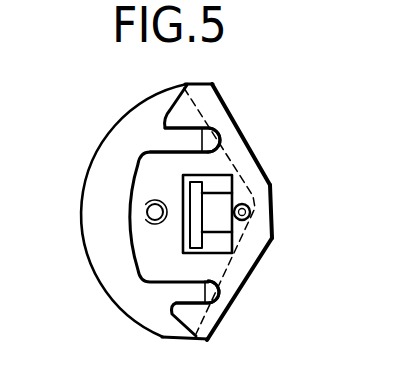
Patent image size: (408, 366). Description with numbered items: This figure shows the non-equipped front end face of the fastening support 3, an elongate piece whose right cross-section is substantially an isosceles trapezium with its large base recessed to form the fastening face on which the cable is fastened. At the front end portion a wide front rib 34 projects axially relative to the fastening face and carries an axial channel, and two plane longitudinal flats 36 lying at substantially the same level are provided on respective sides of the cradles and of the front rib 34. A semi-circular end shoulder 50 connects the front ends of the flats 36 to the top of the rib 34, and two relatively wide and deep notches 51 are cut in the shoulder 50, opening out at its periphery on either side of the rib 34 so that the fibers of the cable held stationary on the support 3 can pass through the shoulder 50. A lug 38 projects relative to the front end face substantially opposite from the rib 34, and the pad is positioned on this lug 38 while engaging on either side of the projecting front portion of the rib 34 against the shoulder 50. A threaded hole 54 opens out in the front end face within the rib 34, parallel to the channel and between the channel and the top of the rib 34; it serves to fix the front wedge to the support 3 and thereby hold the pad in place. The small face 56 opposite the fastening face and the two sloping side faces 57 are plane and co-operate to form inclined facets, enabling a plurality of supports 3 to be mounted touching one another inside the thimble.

The fastening support 3 is at (201, 200).
The front rib 34 is at (135, 246).
The longitudinal flats 36 is at (205, 295).
The lug 38 is at (255, 219).
The end shoulder 50 is at (170, 113).
The notches 51 is at (150, 148).
The threaded hole 54 is at (150, 212).
The small face 56 is at (273, 203).
The sloping side faces 57 is at (243, 132).